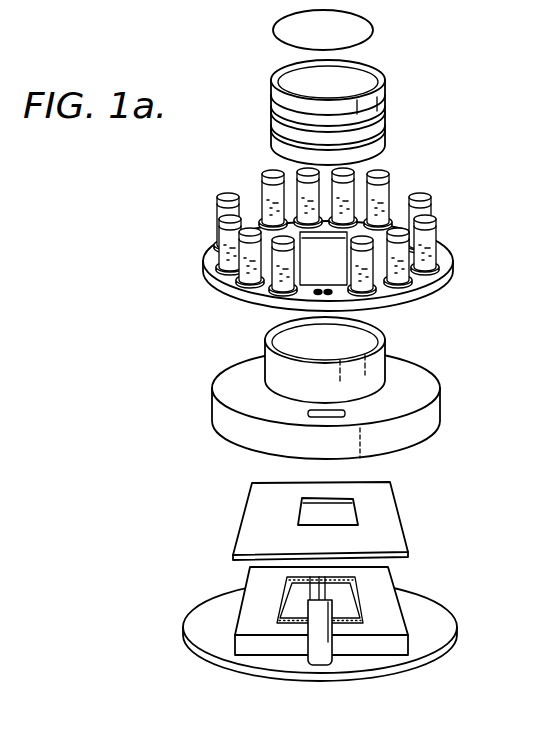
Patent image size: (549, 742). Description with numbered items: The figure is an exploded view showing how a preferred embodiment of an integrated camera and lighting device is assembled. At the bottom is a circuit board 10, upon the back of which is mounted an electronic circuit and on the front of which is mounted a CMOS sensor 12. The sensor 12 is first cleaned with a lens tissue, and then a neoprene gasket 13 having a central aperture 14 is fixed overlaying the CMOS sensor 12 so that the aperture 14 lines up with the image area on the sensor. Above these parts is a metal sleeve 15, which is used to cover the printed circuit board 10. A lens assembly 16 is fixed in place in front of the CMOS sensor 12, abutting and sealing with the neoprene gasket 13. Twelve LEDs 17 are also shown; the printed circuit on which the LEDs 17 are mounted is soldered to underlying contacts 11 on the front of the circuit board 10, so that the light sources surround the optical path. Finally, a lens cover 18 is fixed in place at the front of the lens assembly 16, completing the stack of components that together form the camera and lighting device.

The circuit board 10 is at (417, 662).
The contacts 11 is at (317, 603).
The CMOS sensor 12 is at (263, 608).
The neoprene gasket 13 is at (315, 521).
The central aperture 14 is at (315, 508).
The metal sleeve 15 is at (423, 384).
The lens assembly 16 is at (386, 78).
The LEDs 17 is at (432, 201).
The lens cover 18 is at (373, 26).